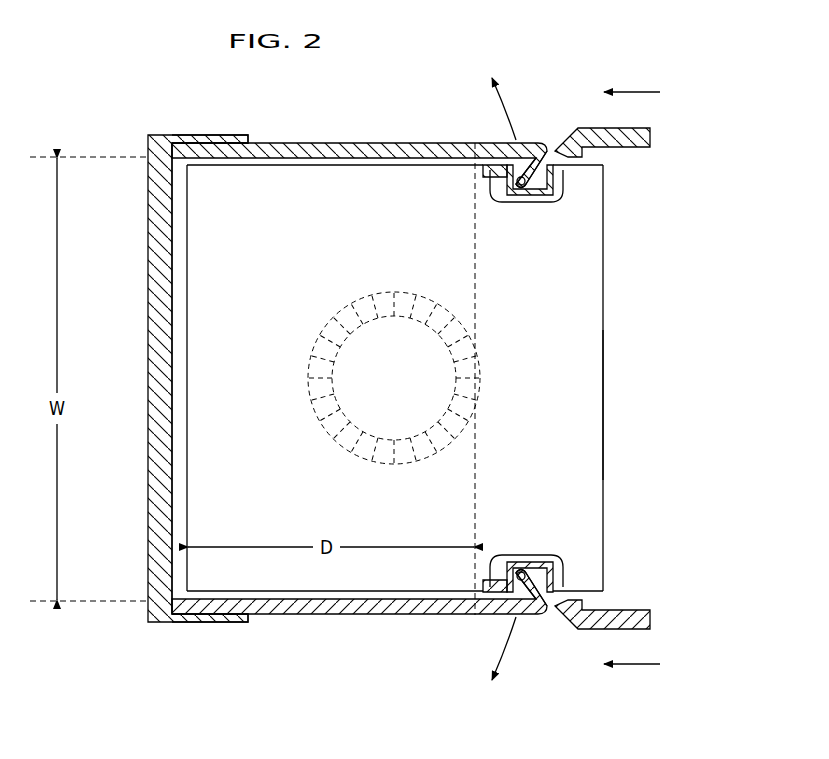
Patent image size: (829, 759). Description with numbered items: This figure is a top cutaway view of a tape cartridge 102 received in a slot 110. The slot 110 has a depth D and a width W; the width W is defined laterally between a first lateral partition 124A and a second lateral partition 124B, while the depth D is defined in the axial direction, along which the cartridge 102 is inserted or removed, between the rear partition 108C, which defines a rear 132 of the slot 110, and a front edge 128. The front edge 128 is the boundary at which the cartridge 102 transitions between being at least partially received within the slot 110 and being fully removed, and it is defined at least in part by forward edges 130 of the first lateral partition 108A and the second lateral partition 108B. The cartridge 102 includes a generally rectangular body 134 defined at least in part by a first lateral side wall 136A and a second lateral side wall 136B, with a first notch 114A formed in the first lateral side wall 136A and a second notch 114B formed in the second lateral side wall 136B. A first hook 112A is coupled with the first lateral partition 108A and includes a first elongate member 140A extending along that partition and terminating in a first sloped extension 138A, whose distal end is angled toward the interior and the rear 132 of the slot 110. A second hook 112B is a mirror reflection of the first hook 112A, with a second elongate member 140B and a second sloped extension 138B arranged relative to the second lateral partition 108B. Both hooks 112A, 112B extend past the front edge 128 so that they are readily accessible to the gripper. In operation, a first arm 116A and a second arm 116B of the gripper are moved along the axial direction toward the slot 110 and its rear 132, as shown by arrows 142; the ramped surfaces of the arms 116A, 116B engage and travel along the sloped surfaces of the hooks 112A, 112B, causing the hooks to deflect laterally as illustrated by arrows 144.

The tape cartridge 102 is at (603, 318).
The first lateral partition 108A is at (206, 622).
The second lateral partition 108B is at (226, 135).
The rear partition 108C is at (148, 338).
The slot 110 is at (180, 268).
The first hook 112A is at (590, 586).
The second hook 112B is at (590, 170).
The first notch 114A is at (522, 560).
The second notch 114B is at (522, 200).
The first arm 116A is at (648, 618).
The second arm 116B is at (648, 142).
The first lateral partition / ramped surface 124A is at (565, 622).
The second lateral partition / ramped surface 124B is at (565, 137).
The front edge 128 is at (478, 268).
The forward edges 130 is at (512, 180).
The rear 132 is at (174, 219).
The body 134 is at (603, 455).
The first lateral side wall 136A is at (272, 600).
The second lateral side wall 136B is at (272, 165).
The first sloped extension 138A is at (550, 562).
The second sloped extension 138B is at (550, 192).
The first elongate member 140A is at (486, 613).
The second elongate member 140B is at (490, 143).
The arrows 142 is at (648, 92).
The arrows 144 is at (501, 96).